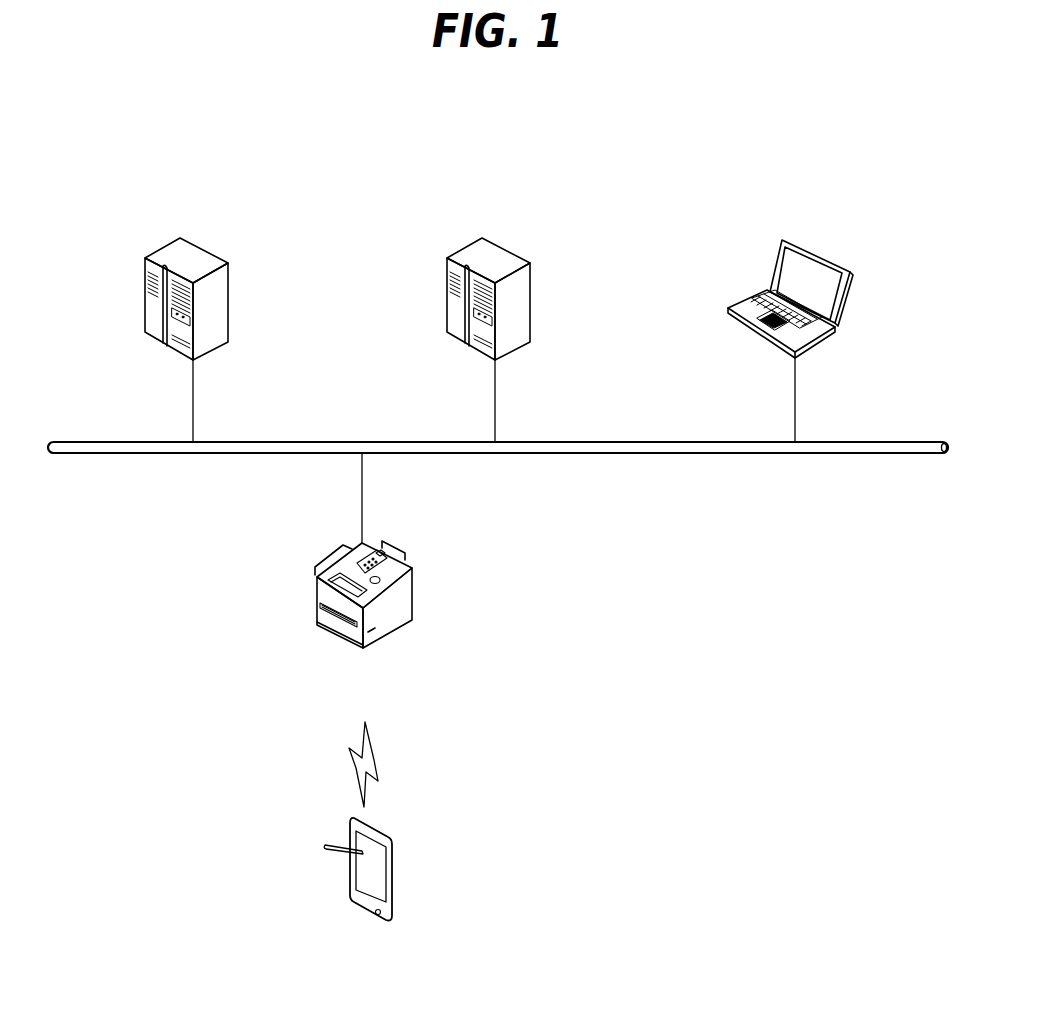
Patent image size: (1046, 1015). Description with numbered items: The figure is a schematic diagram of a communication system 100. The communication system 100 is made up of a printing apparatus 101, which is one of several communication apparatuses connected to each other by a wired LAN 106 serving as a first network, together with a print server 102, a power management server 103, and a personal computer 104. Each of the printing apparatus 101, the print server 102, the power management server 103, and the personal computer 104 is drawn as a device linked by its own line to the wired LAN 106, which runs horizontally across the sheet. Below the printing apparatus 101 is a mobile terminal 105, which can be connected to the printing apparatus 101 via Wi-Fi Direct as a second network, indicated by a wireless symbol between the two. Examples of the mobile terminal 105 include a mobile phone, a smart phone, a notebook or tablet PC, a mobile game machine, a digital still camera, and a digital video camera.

The communication system 100 is at (745, 628).
The printing apparatus 101 is at (415, 590).
The print server 102 is at (180, 232).
The power management server 103 is at (483, 232).
The personal computer 104 is at (783, 238).
The mobile terminal 105 is at (398, 870).
The wired LAN 106 is at (918, 442).